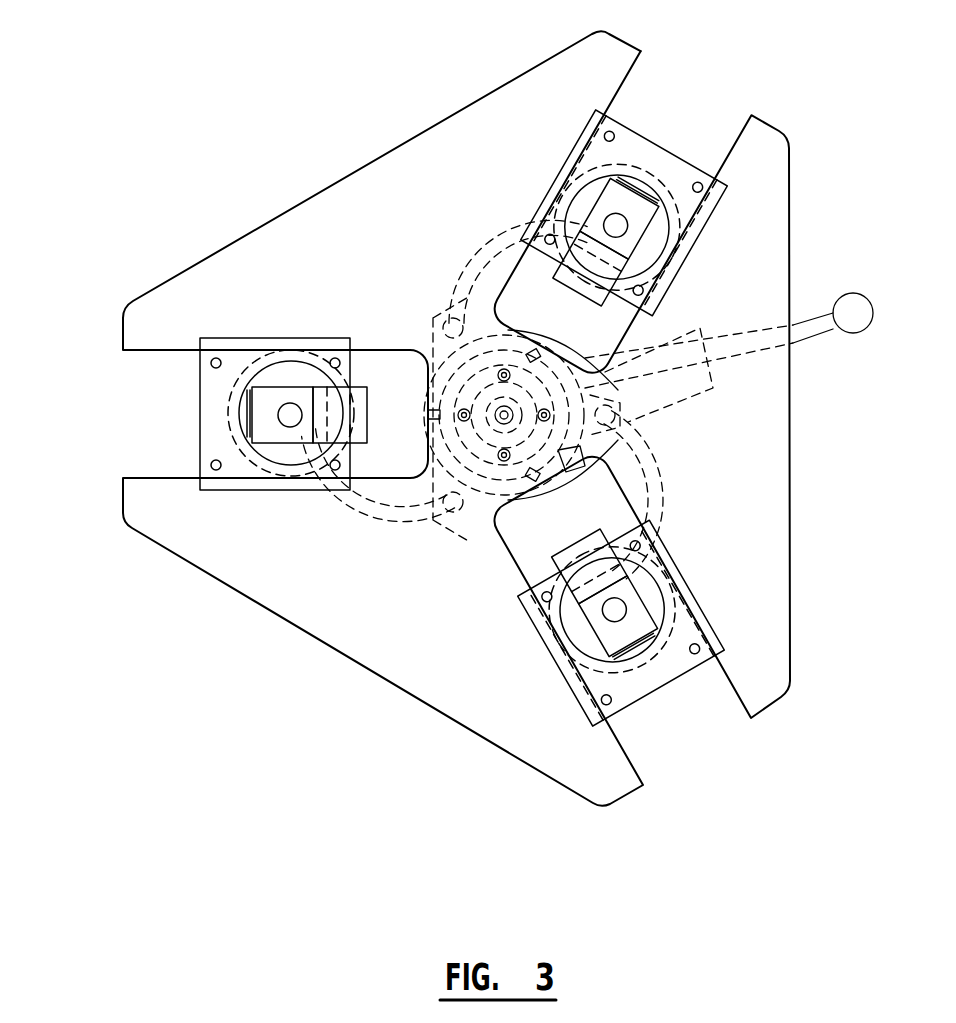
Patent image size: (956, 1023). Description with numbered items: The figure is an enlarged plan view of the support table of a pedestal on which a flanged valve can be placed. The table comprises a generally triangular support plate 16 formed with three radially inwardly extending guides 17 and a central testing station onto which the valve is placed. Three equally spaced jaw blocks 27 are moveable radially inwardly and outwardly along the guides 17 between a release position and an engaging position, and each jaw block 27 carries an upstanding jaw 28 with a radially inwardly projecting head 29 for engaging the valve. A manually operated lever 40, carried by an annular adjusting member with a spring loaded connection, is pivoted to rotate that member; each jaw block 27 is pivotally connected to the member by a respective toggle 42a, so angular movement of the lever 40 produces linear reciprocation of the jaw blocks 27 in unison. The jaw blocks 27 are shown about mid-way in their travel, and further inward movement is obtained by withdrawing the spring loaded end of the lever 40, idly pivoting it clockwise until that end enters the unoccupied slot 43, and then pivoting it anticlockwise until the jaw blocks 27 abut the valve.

The support plate 16 is at (758, 195).
The guides 17 is at (710, 120).
The jaw blocks 27 is at (272, 333).
The upstanding jaw 28 is at (290, 417).
The radially inwardly projecting head 29 is at (322, 560).
The manually operated lever 40 is at (815, 328).
The toggle 42a is at (464, 245).
The slot 43 is at (705, 443).